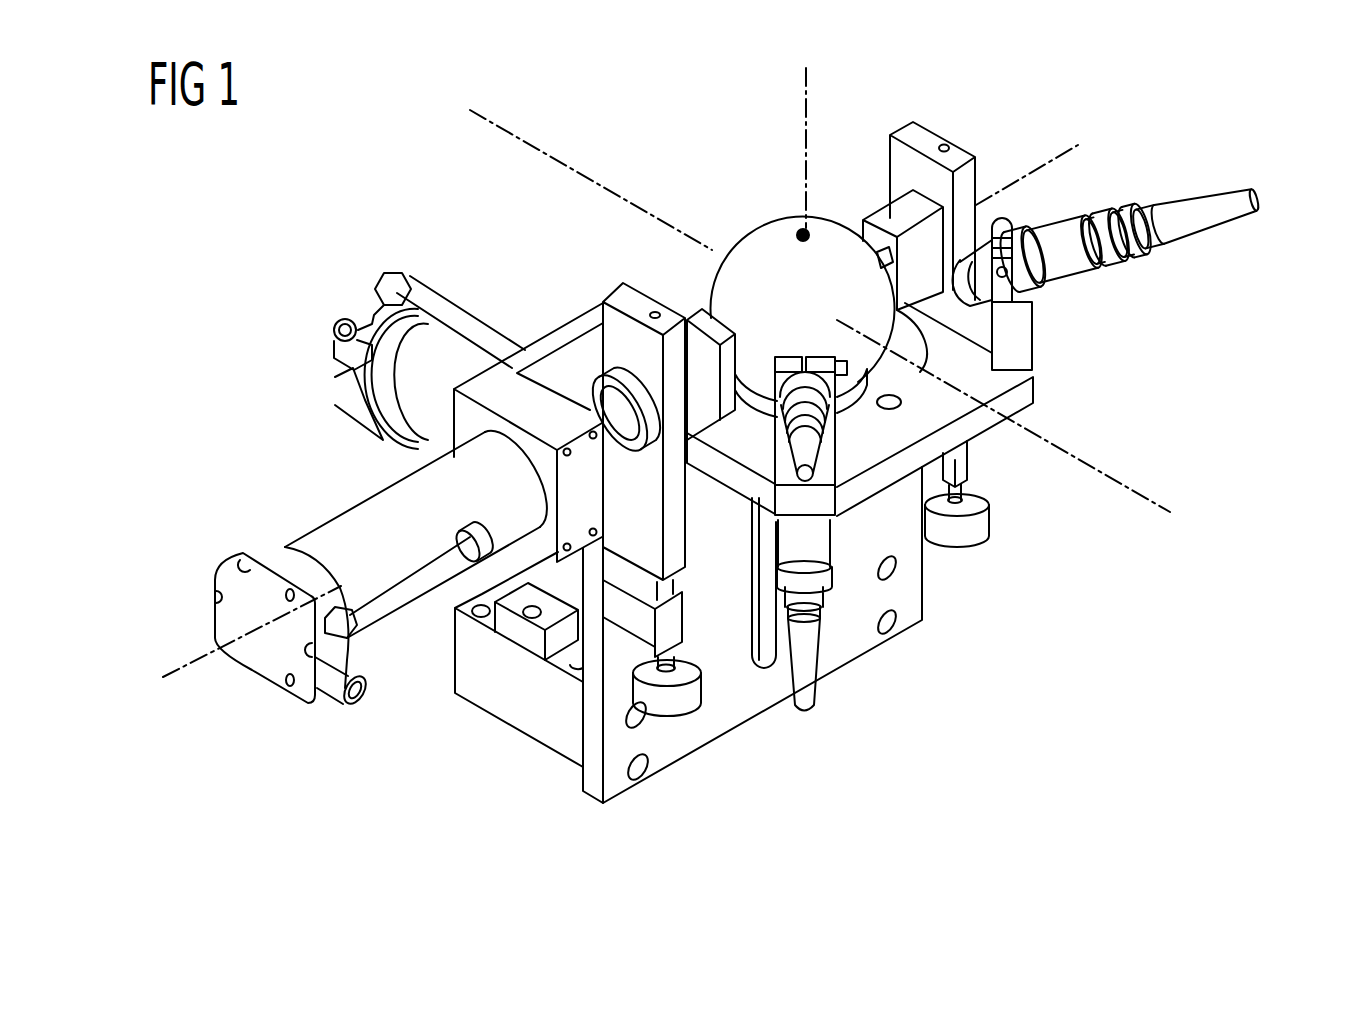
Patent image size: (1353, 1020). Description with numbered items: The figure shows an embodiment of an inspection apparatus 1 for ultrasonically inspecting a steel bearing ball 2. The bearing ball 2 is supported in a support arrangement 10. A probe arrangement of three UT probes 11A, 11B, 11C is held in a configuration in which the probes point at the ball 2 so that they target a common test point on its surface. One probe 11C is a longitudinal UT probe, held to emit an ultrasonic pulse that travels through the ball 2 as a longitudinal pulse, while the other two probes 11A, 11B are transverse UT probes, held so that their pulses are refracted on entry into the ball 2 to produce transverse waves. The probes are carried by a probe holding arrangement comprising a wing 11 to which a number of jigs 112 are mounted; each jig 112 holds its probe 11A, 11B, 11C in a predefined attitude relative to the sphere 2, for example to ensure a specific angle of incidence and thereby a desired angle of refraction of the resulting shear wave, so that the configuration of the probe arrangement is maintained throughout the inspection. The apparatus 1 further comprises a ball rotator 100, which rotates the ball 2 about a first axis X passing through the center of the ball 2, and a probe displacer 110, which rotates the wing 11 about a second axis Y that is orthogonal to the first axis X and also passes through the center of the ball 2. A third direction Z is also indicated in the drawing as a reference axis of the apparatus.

The inspection apparatus 1 is at (406, 128).
The steel bearing ball 2 is at (773, 233).
The support arrangement 10 is at (930, 140).
The wing 11 is at (987, 420).
The transverse UT probe 11A is at (1196, 203).
The transverse UT probe 11B is at (817, 460).
The longitudinal UT probe 11C is at (808, 695).
The ball rotator 100 is at (457, 352).
The probe displacer 110 is at (348, 530).
The jig 112 is at (1027, 340).
The first axis X is at (1138, 490).
The second axis Y is at (175, 672).
The Z axis Z is at (807, 83).